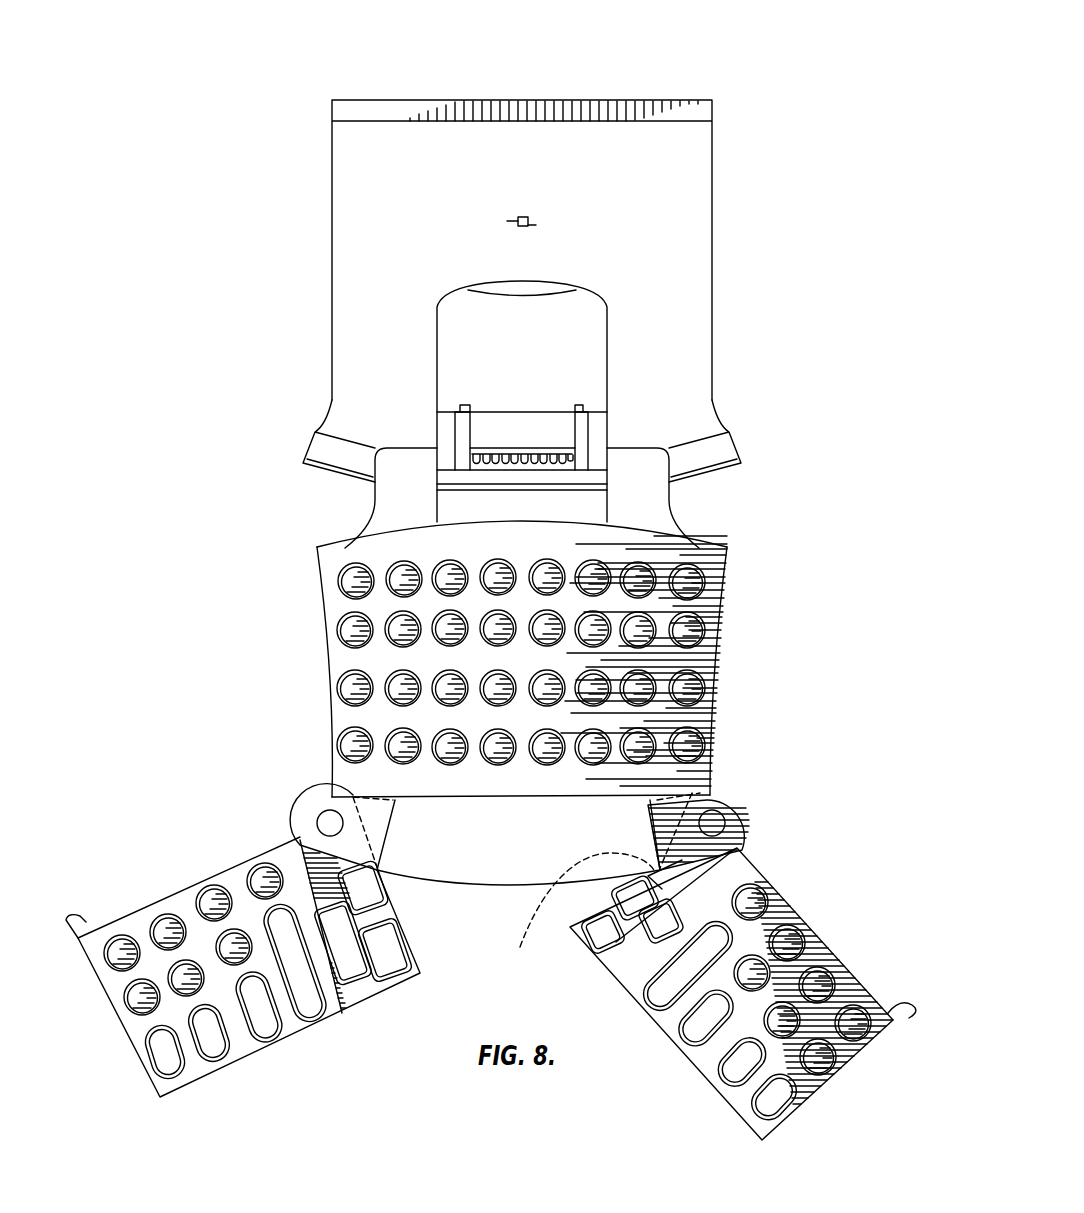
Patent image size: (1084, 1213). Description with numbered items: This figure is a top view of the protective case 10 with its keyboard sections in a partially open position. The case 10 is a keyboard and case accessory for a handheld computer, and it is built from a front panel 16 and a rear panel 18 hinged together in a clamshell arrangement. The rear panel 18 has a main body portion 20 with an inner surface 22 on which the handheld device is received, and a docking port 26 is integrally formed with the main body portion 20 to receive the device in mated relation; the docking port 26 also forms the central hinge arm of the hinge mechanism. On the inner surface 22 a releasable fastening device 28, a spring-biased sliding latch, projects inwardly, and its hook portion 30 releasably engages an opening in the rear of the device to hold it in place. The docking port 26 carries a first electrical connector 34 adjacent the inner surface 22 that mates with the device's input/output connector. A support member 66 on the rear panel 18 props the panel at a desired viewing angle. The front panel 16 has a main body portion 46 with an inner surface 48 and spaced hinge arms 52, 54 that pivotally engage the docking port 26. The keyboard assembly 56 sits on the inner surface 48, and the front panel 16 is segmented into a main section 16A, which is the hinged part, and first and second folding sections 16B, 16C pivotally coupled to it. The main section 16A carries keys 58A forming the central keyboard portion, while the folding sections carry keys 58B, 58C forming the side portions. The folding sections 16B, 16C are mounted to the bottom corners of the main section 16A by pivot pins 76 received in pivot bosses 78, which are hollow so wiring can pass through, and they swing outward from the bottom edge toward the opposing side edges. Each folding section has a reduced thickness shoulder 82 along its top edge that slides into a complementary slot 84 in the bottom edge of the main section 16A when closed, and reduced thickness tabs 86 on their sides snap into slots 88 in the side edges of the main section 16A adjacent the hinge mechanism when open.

The protective case 10 is at (232, 291).
The front panel 16 is at (707, 655).
The main section 16A is at (500, 787).
The first folding section 16B is at (700, 1057).
The second folding section 16C is at (247, 1047).
The rear panel 18 is at (685, 216).
The main body portion 20 is at (703, 289).
The inner surface 22 is at (690, 347).
The docking port 26 is at (596, 434).
The releasable fastening device 28 is at (517, 212).
The hook portion 30 is at (533, 225).
The first electrical connector 34 is at (528, 454).
The main body portion 46 is at (343, 657).
The inner surface 48 is at (353, 776).
The hinge arm 52 is at (392, 501).
The hinge arm 54 is at (652, 493).
The keyboard assembly 56 is at (343, 708).
The keys 58A is at (693, 740).
The keys 58B is at (818, 980).
The keys 58C is at (210, 892).
The support member 66 is at (478, 333).
The pivot pins 76 is at (318, 822).
The pivot bosses 78 is at (298, 813).
The reduced thickness shoulder 82 is at (367, 995).
The slot 84 is at (582, 915).
The reduced thickness tabs 86 is at (74, 927).
The slots 88 is at (343, 552).